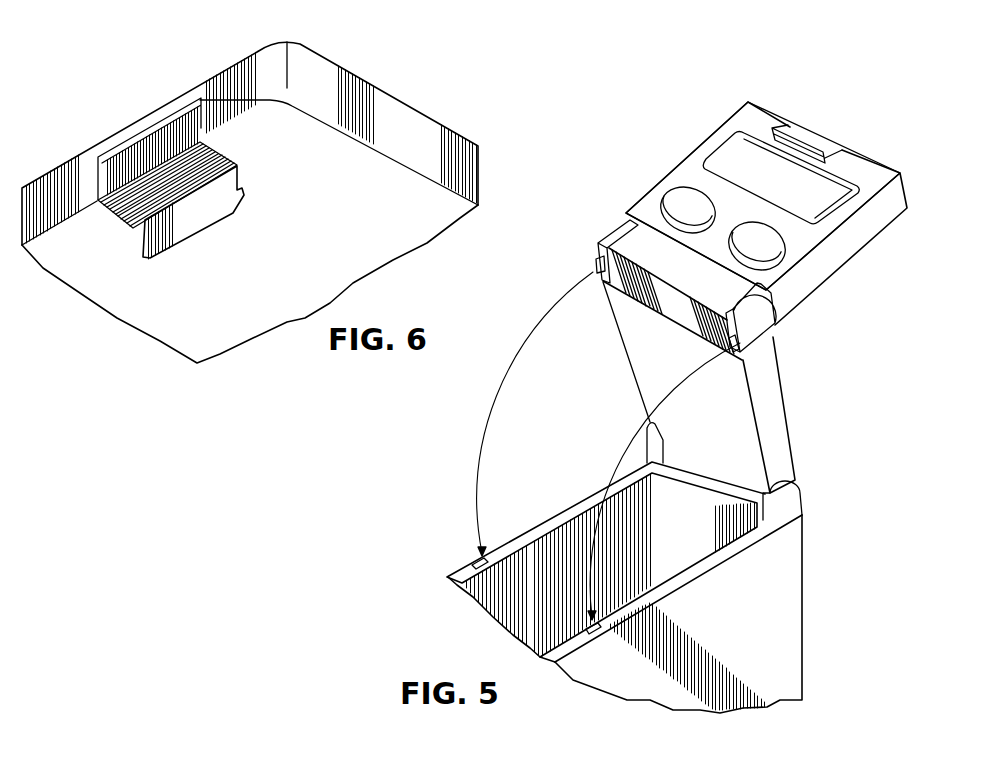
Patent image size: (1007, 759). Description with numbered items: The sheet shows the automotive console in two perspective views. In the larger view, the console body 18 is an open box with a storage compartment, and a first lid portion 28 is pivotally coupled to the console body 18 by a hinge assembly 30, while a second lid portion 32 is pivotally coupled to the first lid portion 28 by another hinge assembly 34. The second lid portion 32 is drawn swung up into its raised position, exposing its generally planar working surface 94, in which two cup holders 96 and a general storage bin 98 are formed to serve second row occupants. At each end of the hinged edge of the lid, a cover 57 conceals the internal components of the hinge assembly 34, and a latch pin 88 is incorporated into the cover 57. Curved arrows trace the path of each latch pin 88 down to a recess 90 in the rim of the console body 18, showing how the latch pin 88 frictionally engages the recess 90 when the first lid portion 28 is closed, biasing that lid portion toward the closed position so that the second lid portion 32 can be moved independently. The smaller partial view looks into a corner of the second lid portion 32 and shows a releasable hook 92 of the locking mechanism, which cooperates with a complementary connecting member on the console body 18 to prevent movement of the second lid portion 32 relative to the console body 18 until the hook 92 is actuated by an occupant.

In FIG. 5, the console body 18 is at (791, 668).
In FIG. 5, the first lid portion 28 is at (790, 410).
In FIG. 5, the hinge assembly 30 is at (804, 489).
In FIG. 6, the second lid portion 32 is at (317, 66).
In FIG. 5, the second lid portion 32 is at (848, 268).
In FIG. 5, the hinge assembly 34 is at (771, 331).
In FIG. 5, the cover 57 is at (603, 233).
In FIG. 5, the latch pin 88 is at (597, 266).
In FIG. 5, the recess 90 is at (474, 547).
In FIG. 6, the releasable hook 92 is at (243, 215).
In FIG. 5, the releasable hook 92 is at (808, 137).
In FIG. 5, the working surface 94 is at (683, 180).
In FIG. 5, the cup holders 96 is at (667, 201).
In FIG. 5, the storage bin 98 is at (725, 167).